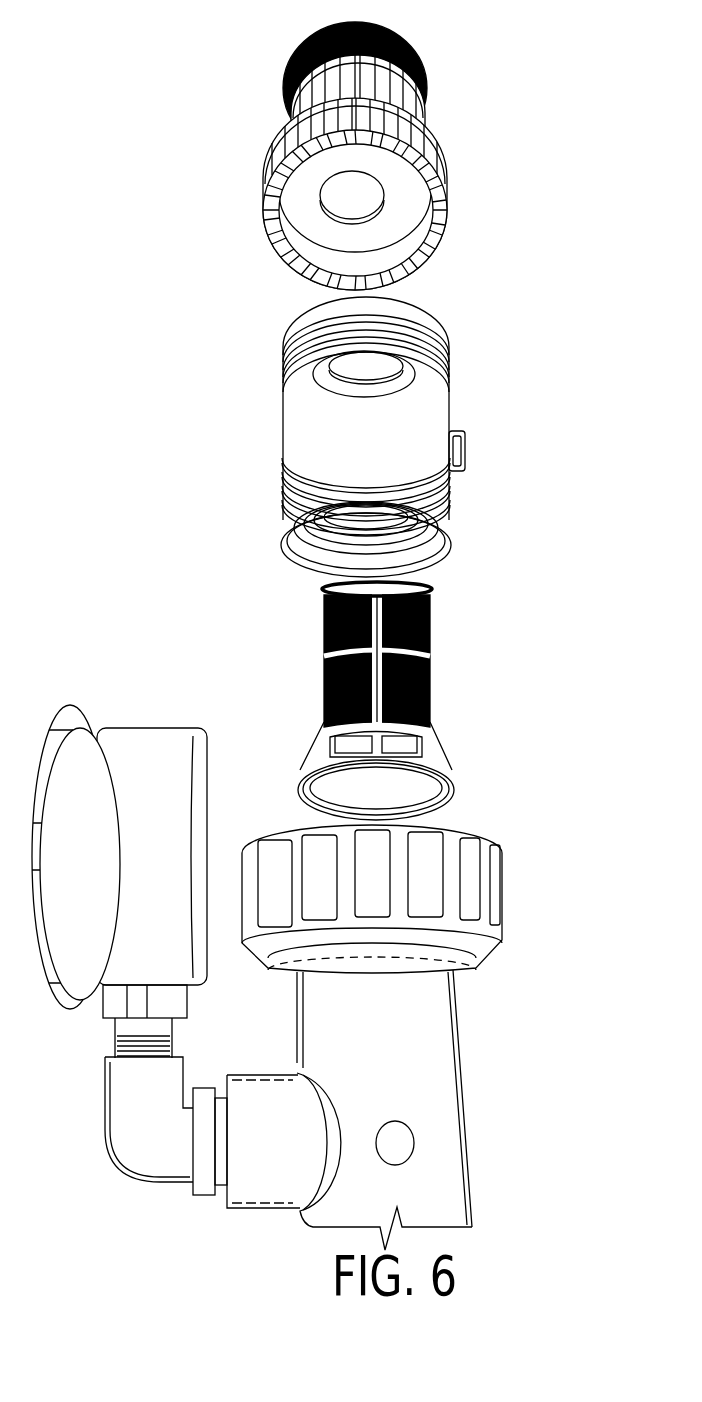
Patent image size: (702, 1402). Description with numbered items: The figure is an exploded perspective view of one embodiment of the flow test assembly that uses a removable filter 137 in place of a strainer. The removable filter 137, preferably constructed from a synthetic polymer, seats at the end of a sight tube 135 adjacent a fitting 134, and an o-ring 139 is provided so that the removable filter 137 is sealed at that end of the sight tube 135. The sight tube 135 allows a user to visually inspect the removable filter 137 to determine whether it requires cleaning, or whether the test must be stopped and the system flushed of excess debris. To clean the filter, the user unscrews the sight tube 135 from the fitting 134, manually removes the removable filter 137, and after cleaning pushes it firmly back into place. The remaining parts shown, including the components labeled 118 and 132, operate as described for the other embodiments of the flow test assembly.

The pressure gauge 118 is at (142, 727).
The cap 132 is at (437, 157).
The fitting 134 is at (495, 882).
The sight tube 135 is at (435, 392).
The removable filter 137 is at (422, 673).
The o-ring 139 is at (453, 780).